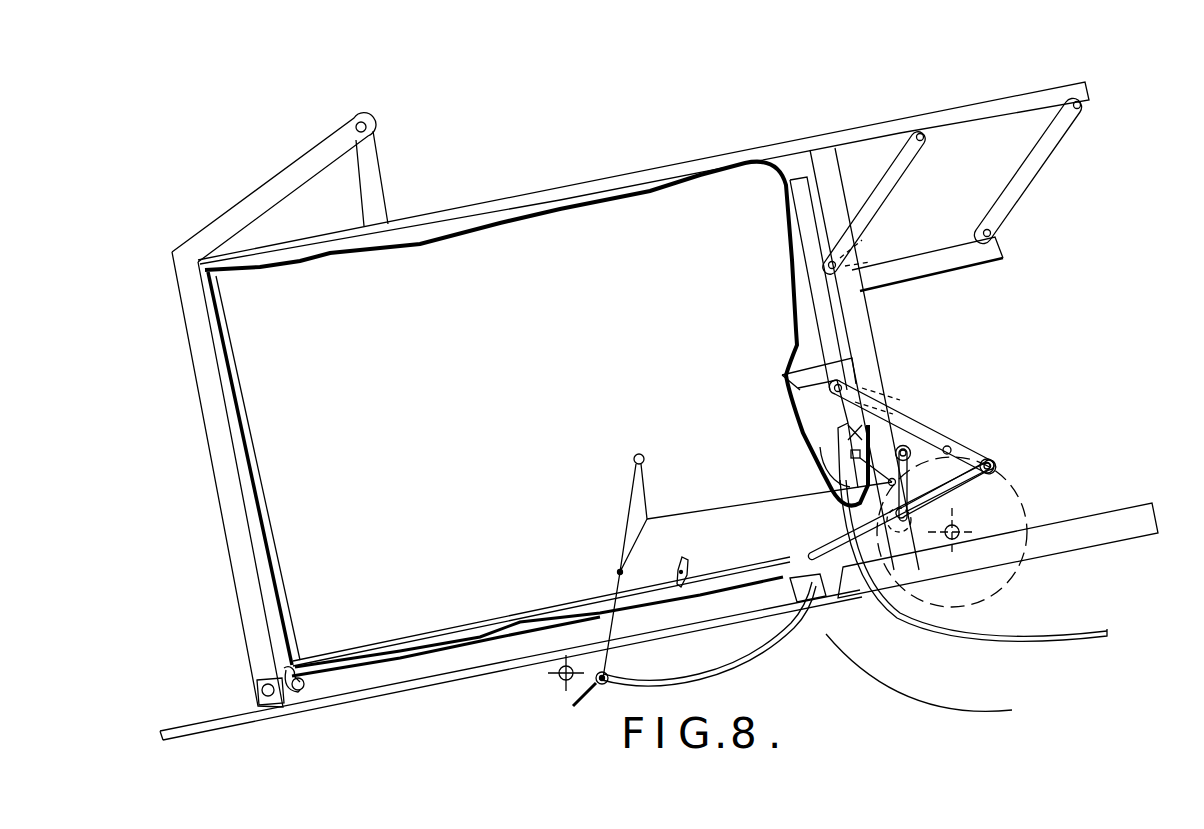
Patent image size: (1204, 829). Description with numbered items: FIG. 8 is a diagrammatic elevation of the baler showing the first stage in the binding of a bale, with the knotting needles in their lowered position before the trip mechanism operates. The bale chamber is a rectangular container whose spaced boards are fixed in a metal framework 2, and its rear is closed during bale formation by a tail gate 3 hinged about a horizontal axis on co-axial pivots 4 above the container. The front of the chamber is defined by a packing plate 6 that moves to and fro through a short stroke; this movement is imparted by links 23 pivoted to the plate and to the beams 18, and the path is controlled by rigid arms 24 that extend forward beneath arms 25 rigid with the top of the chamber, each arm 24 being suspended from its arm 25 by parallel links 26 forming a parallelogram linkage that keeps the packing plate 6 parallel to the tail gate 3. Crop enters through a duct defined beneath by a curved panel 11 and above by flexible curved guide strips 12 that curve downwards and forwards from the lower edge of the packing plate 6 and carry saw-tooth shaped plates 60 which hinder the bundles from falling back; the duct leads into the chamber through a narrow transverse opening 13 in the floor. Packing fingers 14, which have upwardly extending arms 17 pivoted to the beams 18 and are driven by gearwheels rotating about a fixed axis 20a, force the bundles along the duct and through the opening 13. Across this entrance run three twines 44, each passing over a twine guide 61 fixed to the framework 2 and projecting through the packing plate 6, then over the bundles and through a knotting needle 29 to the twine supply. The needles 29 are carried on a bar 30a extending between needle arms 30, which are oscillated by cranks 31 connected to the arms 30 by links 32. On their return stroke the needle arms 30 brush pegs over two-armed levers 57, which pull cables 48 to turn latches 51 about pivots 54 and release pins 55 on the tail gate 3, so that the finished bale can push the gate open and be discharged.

The metal framework 2 is at (582, 185).
The tail gate 3 is at (232, 540).
The co-axial pivots 4 is at (367, 127).
The packing plate 6 is at (795, 207).
The curved panel 11 is at (976, 707).
The flexible curved guide strips 12 is at (1047, 642).
The narrow transverse opening 13 is at (822, 596).
The packing fingers 14 is at (816, 552).
The upwardly extending arms 17 is at (943, 495).
The beams 18 is at (993, 460).
The fixed axis 20a is at (962, 538).
The links 23 is at (900, 408).
The rigid arms 24 is at (918, 265).
The arms 25 is at (998, 110).
The parallel links 26 is at (880, 198).
The knotting needles 29 is at (670, 683).
The needle arms 30 is at (637, 507).
The bar 30a is at (573, 706).
The cranks 31 is at (845, 474).
The links 32 is at (708, 512).
The twines 44 is at (790, 250).
The cables 48 is at (507, 615).
The latches 51 is at (280, 678).
The pivots 54 is at (302, 684).
The pins 55 is at (272, 692).
The two-armed levers 57 is at (690, 567).
The saw-tooth shaped plates 60 is at (858, 566).
The twine guide 61 is at (796, 392).